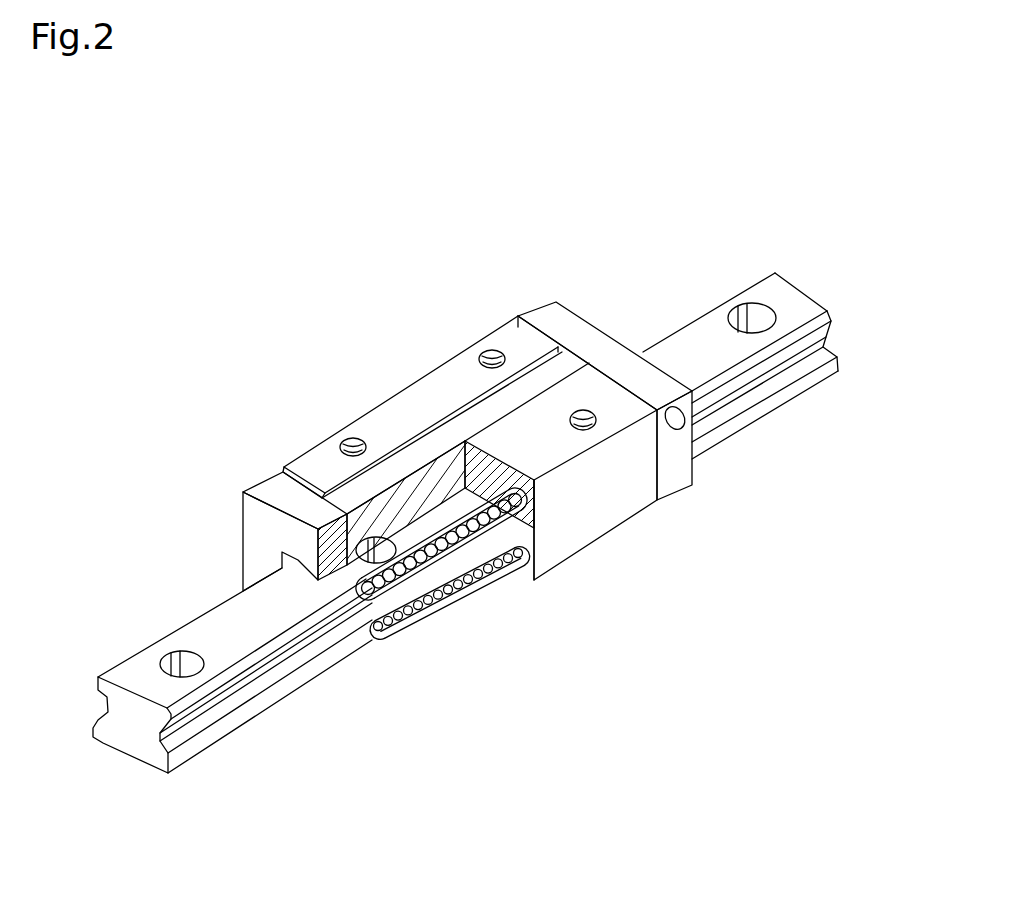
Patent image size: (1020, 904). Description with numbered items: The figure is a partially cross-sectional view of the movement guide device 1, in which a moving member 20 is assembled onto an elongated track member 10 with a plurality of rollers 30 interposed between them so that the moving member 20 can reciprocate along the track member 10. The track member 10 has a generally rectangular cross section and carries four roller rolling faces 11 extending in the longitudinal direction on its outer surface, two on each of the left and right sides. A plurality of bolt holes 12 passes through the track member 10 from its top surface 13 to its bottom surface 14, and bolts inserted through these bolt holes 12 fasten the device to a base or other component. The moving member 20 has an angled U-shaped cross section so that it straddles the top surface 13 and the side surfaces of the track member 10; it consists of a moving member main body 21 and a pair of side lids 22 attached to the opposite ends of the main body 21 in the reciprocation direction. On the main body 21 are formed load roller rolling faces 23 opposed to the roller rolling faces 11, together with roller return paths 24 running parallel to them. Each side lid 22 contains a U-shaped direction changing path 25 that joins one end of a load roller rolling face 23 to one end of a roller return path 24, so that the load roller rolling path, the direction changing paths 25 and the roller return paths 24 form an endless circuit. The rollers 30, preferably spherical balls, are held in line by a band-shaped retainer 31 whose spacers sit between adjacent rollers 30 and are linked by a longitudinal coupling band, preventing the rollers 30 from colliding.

The movement guide device 1 is at (631, 272).
The track member 10 is at (146, 748).
The roller rolling faces 11 is at (277, 649).
The bolt holes 12 is at (181, 657).
The top surface 13 is at (130, 670).
The bottom surface 14 is at (125, 755).
The moving member 20 is at (507, 227).
The moving member main body 21 is at (422, 393).
The side lids 22 is at (547, 315).
The load roller rolling face 23 is at (515, 571).
The roller return paths 24 is at (532, 540).
The direction changing path 25 is at (370, 642).
The rollers 30 is at (467, 595).
The band-shaped retainer 31 is at (425, 622).